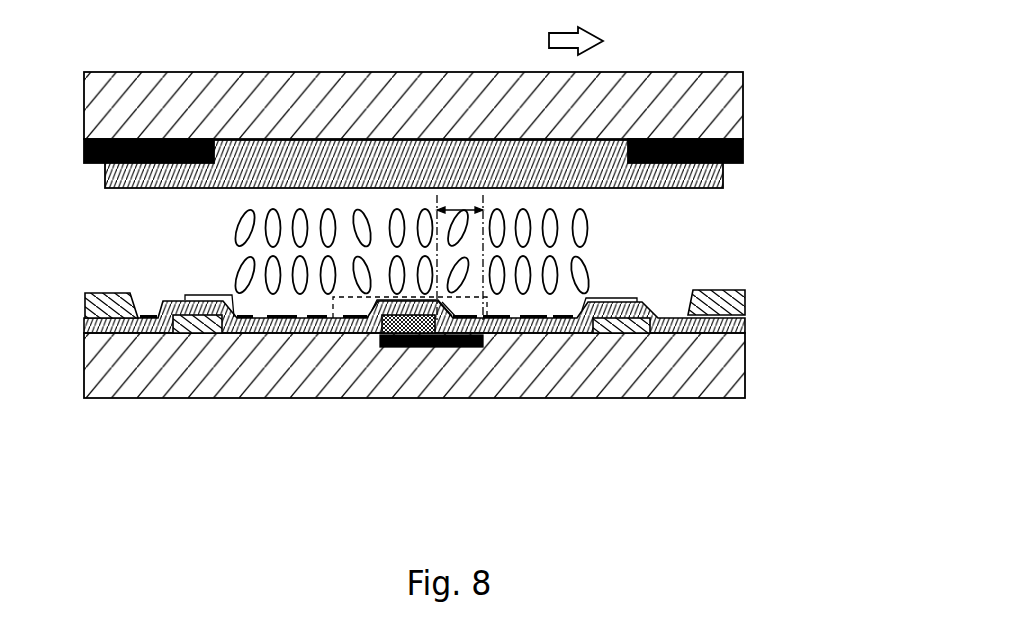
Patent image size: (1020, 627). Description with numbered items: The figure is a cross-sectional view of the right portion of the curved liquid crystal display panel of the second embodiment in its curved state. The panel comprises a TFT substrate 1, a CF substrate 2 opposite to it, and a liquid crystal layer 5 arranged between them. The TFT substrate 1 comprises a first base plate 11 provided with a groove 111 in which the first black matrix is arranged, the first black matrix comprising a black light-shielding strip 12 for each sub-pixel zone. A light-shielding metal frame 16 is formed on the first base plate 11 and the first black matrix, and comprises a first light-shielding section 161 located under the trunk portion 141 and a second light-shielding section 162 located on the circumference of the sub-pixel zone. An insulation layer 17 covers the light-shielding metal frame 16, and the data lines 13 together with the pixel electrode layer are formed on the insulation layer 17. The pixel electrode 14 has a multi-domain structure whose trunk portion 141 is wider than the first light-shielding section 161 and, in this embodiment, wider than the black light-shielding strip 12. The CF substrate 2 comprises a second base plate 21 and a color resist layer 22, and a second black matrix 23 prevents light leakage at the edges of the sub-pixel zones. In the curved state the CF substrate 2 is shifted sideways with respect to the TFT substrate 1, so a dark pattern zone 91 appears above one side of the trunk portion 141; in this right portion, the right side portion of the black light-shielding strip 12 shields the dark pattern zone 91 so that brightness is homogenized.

The thin-film transistor (TFT) substrate 1 is at (453, 395).
The color filter (CF) substrate 2 is at (449, 98).
The liquid crystal layer 5 is at (514, 348).
The first base plate 11 is at (630, 352).
The black light-shielding strip 12 is at (470, 345).
The data lines 13 is at (97, 312).
The pixel electrode 14 is at (574, 314).
The light-shielding metal frame 16 is at (320, 397).
The insulation layer 17 is at (688, 316).
The second base plate 21 is at (283, 108).
The color resist layer 22 is at (382, 153).
The second black matrix 23 is at (168, 138).
The dark pattern zone 91 is at (472, 270).
The groove 111 is at (430, 345).
The trunk portion 141 is at (413, 345).
The first light-shielding section 161 is at (398, 379).
The second light-shielding section 162 is at (194, 318).